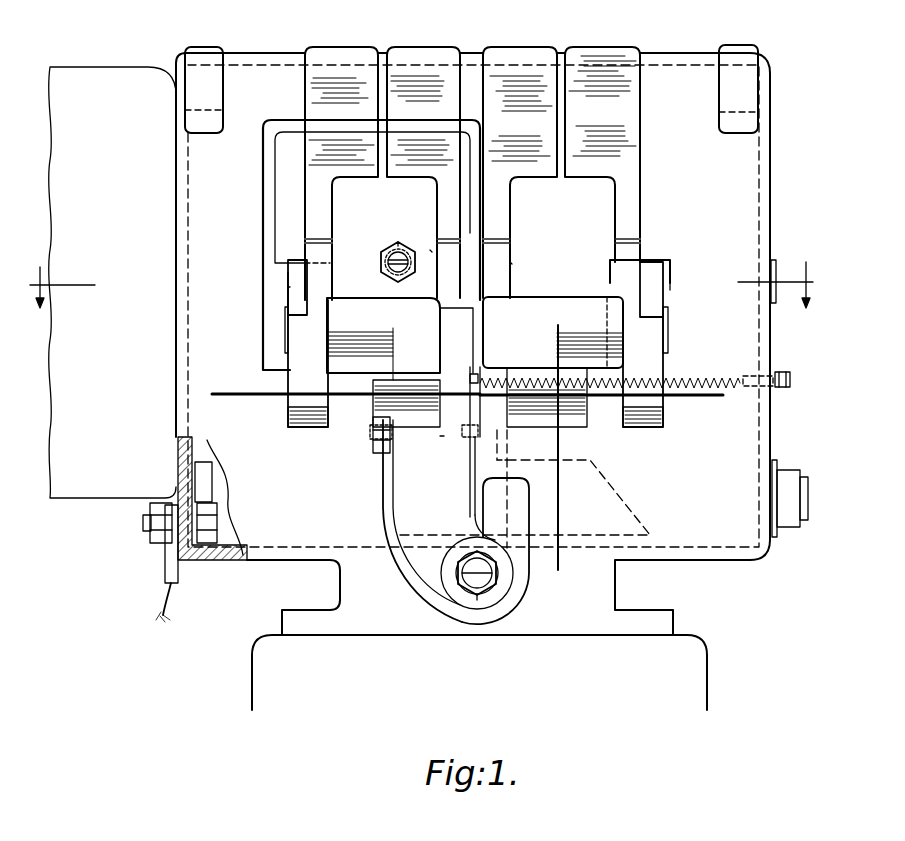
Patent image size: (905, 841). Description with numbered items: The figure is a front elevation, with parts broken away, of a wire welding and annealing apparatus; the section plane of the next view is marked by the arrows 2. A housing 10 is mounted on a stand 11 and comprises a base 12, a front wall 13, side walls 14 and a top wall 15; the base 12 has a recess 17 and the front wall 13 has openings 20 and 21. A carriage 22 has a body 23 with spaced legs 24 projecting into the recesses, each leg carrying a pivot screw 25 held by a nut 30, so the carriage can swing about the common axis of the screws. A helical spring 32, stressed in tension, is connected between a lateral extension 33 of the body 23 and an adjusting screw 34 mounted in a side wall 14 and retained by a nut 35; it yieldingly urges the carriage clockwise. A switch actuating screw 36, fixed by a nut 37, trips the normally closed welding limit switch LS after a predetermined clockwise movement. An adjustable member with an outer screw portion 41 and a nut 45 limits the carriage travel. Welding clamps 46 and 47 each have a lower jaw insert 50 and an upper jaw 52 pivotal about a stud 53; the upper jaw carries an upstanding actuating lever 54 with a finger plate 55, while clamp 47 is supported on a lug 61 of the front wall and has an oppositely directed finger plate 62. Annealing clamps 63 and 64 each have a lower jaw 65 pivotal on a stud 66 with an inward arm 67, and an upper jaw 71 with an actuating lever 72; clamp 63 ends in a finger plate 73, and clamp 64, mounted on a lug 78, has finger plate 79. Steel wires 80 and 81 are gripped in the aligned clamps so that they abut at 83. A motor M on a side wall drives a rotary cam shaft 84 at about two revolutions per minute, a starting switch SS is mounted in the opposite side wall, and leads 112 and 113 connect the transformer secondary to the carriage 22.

The housing 10 is at (670, 50).
The stand 11 is at (712, 673).
The base 12 is at (615, 587).
The front wall 13 is at (265, 540).
The side wall 14 is at (762, 160).
The top wall 15 is at (242, 63).
The recess 17 is at (427, 596).
The opening 20 is at (263, 224).
The opening 21 is at (672, 288).
The carriage 22 is at (388, 497).
The carriage body 23 is at (288, 178).
The leg 24 is at (468, 605).
The pivot screw 25 is at (461, 566).
The nut 30 is at (496, 585).
The helical spring 32 is at (712, 372).
The lateral extension 33 is at (476, 375).
The adjusting screw 34 is at (785, 372).
The nut 35 is at (780, 387).
The switch actuating screw 36 is at (440, 436).
The nut 37 is at (385, 452).
The outer screw portion 41 is at (386, 265).
The nut 45 is at (398, 244).
The welding clamp 46 is at (431, 252).
The welding clamp 47 is at (513, 262).
The insert 50 is at (545, 415).
The upper clamp jaw 52 is at (505, 320).
The stud 53 is at (471, 320).
The actuating lever 54 is at (502, 203).
The finger plate 55 is at (410, 72).
The lug 61 is at (560, 498).
The finger plate 62 is at (507, 72).
The annealing clamp 63 is at (283, 288).
The annealing clamp 64 is at (678, 263).
The lower jaw 65 is at (650, 428).
The stud 66 is at (668, 325).
The arm 67 is at (655, 296).
The upper jaw 71 is at (645, 359).
The actuating lever 72 is at (635, 210).
The finger plate 73 is at (327, 72).
The lug 78 is at (580, 296).
The finger plate 79 is at (588, 70).
The steel wire 80 is at (245, 400).
The steel wire 81 is at (697, 400).
The abutment 83 is at (474, 437).
The rotary cam shaft 84 is at (778, 265).
The lead 112 is at (163, 598).
The lead 113 is at (200, 452).
The motor M is at (97, 75).
The welding limit switch LS is at (492, 457).
The starting switch SS is at (792, 530).
The section line 2 is at (421, 278).